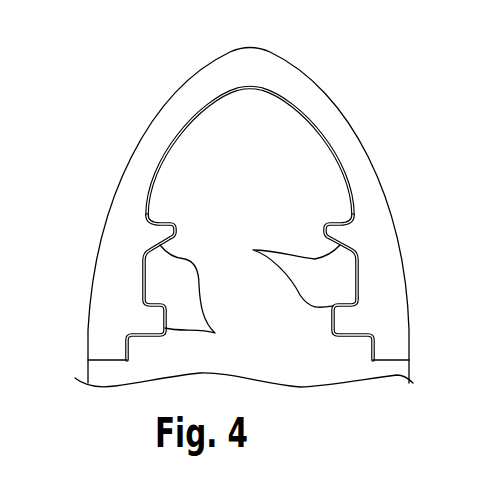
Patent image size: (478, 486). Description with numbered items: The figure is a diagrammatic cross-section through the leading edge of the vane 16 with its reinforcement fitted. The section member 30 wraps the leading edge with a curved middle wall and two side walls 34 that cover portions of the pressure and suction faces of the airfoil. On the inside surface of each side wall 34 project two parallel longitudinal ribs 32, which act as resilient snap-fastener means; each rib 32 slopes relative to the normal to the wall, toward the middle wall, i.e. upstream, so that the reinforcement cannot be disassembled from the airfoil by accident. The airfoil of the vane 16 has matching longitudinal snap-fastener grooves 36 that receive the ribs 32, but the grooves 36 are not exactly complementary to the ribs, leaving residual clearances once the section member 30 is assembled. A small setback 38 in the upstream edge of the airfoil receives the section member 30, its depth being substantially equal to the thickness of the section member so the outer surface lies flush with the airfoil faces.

The vane 16 is at (277, 340).
The section member 30 is at (270, 75).
The longitudinal rib 32 is at (160, 236).
The side wall 34 is at (360, 180).
The snap-fastener groove 36 is at (253, 250).
The setback 38 is at (378, 348).